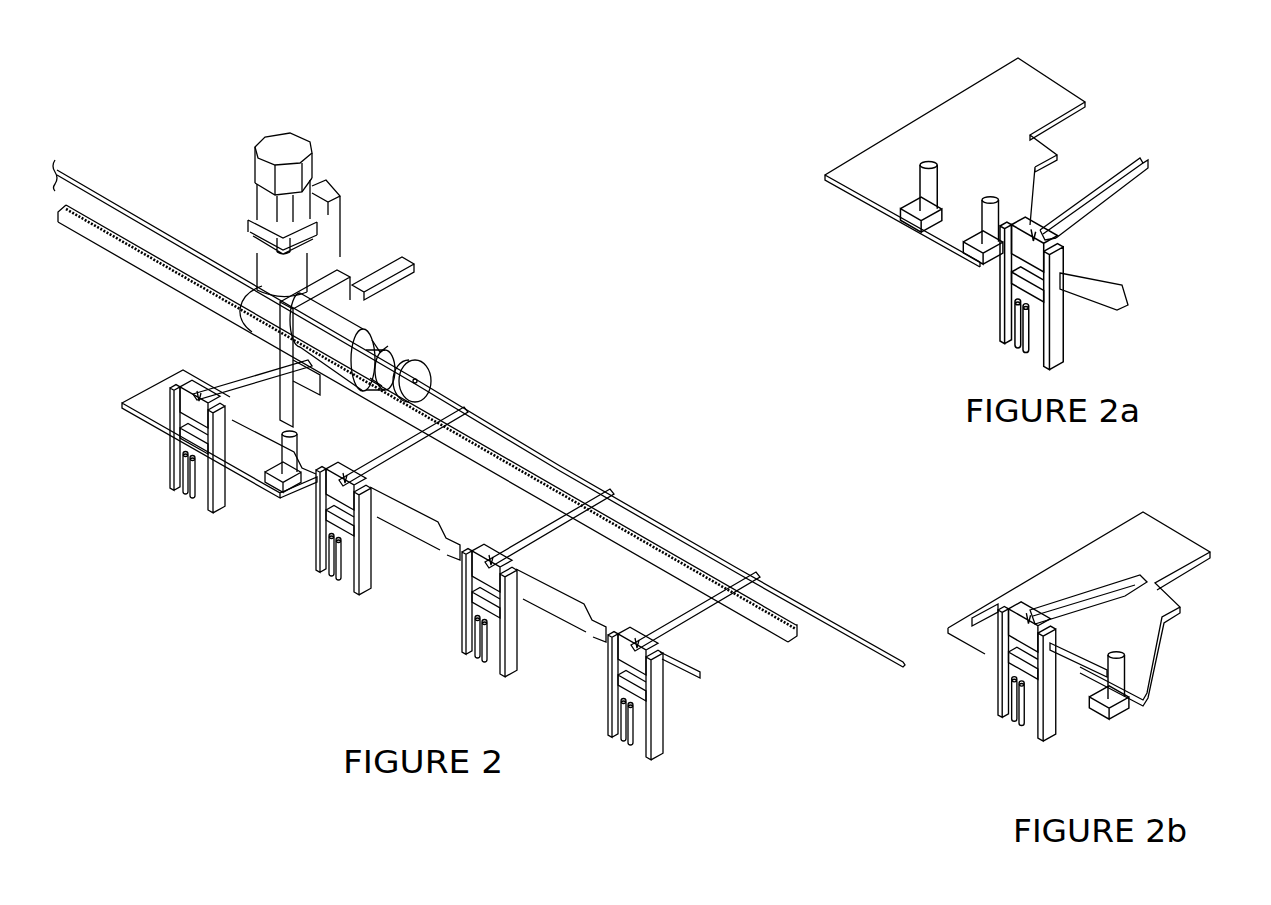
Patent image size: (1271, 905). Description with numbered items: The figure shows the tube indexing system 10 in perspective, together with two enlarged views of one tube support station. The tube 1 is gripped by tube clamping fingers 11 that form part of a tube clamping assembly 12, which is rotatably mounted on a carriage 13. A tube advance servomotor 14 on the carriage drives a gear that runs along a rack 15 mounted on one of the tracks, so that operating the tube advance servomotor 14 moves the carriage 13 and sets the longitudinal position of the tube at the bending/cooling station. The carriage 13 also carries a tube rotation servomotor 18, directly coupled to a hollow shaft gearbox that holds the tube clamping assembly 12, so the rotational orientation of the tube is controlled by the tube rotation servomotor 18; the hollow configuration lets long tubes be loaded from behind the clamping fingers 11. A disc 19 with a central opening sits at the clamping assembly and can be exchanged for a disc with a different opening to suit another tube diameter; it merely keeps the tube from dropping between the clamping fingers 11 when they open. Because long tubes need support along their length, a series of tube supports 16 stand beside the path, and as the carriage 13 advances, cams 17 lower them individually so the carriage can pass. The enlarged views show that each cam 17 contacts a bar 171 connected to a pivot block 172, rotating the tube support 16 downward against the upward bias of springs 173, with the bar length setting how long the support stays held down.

In FIG. 2, the tube 1 is at (737, 568).
In FIG. 2, the tube indexing system 10 is at (187, 95).
In FIG. 2, the tube clamping fingers 11 is at (405, 358).
In FIG. 2, the tube clamping assembly 12 is at (382, 330).
In FIG. 2, the carriage 13 is at (137, 413).
In FIG. 2A, the carriage 13 is at (975, 100).
In FIG. 2B, the carriage 13 is at (1142, 635).
In FIG. 2, the tube advance servomotor 14 is at (333, 213).
In FIG. 2, the rack 15 is at (627, 530).
In FIG. 2, the tube supports 16 is at (563, 523).
In FIG. 2A, the tube supports 16 is at (1077, 212).
In FIG. 2B, the tube supports 16 is at (1075, 608).
In FIG. 2, the cams 17 is at (287, 448).
In FIG. 2A, the cams 17 is at (928, 187).
In FIG. 2B, the cams 17 is at (1112, 673).
In FIG. 2, the tube rotation servomotor 18 is at (300, 136).
In FIG. 2, the disc 19 is at (432, 362).
In FIG. 2A, the bars 171 is at (1092, 297).
In FIG. 2B, the bars 171 is at (1083, 687).
In FIG. 2A, the pivot blocks 172 is at (1023, 255).
In FIG. 2B, the pivot blocks 172 is at (1022, 633).
In FIG. 2A, the springs 173 is at (1010, 320).
In FIG. 2B, the springs 173 is at (1010, 700).